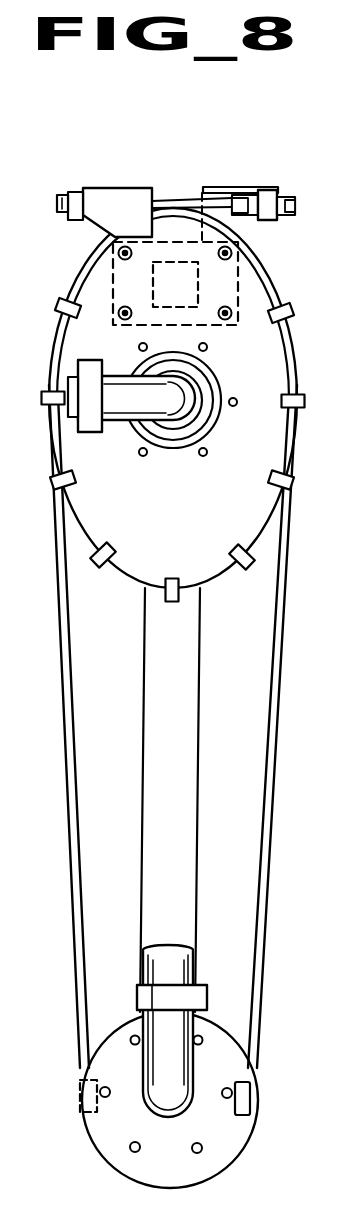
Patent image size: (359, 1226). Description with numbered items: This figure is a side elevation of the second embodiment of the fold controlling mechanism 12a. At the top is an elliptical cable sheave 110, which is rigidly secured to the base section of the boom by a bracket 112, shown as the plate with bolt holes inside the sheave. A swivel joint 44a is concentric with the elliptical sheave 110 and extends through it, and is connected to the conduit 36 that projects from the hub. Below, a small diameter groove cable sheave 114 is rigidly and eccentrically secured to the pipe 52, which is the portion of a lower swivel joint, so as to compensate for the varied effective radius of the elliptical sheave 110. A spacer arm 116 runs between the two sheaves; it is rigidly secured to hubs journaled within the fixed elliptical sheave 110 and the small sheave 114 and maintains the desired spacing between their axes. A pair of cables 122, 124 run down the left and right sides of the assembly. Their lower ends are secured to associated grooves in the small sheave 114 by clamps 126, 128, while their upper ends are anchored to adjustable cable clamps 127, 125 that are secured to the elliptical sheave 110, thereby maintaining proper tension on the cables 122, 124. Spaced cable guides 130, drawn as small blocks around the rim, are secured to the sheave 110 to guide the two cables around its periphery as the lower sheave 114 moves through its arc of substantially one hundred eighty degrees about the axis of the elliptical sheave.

The fold controlling mechanism 12a is at (73, 987).
The conduit 36 is at (72, 376).
The swivel joint 44a is at (177, 428).
The pipe 52 is at (178, 947).
The elliptical cable sheave 110 is at (261, 262).
The bracket 112 is at (152, 278).
The small diameter groove cable sheave 114 is at (167, 1178).
The spacer arm 116 is at (192, 670).
The cable 122 is at (65, 632).
The cable 124 is at (276, 630).
The adjustable cable clamp 125 is at (276, 190).
The clamp 126 is at (88, 1117).
The adjustable cable clamp 127 is at (85, 188).
The clamp 128 is at (247, 1115).
The cable guides 130 is at (43, 398).